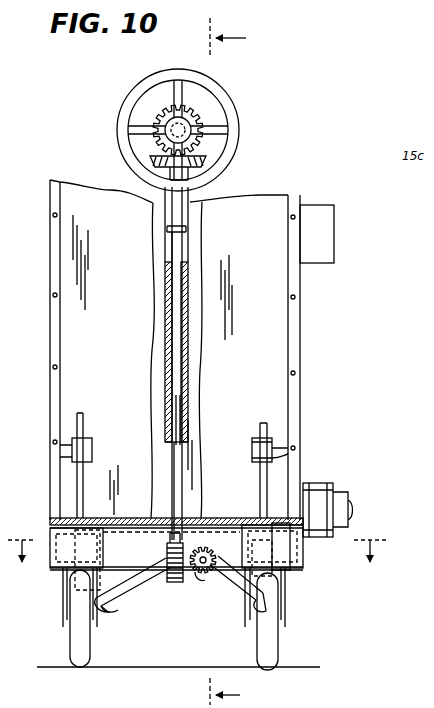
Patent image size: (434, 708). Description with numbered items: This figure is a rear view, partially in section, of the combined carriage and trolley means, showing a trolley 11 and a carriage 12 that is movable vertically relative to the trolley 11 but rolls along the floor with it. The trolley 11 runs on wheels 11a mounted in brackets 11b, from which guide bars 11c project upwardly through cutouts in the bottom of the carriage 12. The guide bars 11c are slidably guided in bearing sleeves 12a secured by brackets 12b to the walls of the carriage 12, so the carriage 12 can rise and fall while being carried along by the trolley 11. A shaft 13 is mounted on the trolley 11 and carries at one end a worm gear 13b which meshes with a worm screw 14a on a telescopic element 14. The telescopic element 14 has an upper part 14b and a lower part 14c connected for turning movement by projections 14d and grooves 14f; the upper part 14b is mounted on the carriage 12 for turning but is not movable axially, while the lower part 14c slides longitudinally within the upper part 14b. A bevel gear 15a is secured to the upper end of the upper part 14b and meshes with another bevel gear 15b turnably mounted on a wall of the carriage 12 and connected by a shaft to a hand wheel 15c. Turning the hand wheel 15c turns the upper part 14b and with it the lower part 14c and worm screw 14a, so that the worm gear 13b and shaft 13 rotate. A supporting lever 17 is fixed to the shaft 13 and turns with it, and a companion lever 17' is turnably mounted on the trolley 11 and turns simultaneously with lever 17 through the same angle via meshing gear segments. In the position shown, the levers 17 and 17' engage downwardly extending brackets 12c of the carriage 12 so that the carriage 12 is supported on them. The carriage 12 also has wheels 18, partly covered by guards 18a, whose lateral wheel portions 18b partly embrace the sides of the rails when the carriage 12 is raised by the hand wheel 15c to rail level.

The trolley 11 is at (239, 363).
The wheels 11a is at (270, 661).
The brackets 11b is at (285, 625).
The guide bars 11c is at (82, 413).
The carriage 12 is at (297, 333).
The bearing sleeves 12a is at (272, 441).
The brackets 12b is at (92, 452).
The downwardly extending brackets 12c is at (78, 588).
The shaft 13 is at (206, 556).
The worm gear 13b is at (198, 580).
The telescopic element 14 is at (198, 304).
The worm screw 14a is at (167, 550).
The upper part 14b is at (186, 252).
The lower part 14c is at (183, 481).
The projections 14d is at (188, 408).
The grooves 14f is at (165, 407).
The bevel gear 15a is at (208, 160).
The bevel gear 15b is at (200, 115).
The hand wheel 15c is at (238, 126).
The supporting lever member 17 is at (229, 593).
The supporting lever member 17' is at (133, 594).
The wheels 18 is at (320, 484).
The guards 18a is at (325, 212).
The lateral wheel portions 18b is at (340, 492).